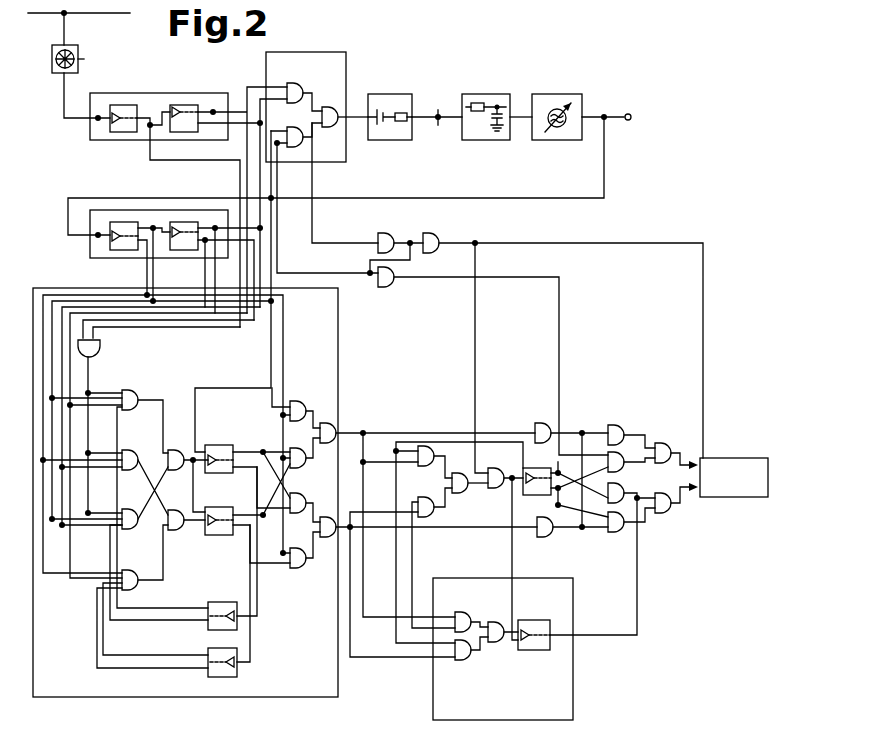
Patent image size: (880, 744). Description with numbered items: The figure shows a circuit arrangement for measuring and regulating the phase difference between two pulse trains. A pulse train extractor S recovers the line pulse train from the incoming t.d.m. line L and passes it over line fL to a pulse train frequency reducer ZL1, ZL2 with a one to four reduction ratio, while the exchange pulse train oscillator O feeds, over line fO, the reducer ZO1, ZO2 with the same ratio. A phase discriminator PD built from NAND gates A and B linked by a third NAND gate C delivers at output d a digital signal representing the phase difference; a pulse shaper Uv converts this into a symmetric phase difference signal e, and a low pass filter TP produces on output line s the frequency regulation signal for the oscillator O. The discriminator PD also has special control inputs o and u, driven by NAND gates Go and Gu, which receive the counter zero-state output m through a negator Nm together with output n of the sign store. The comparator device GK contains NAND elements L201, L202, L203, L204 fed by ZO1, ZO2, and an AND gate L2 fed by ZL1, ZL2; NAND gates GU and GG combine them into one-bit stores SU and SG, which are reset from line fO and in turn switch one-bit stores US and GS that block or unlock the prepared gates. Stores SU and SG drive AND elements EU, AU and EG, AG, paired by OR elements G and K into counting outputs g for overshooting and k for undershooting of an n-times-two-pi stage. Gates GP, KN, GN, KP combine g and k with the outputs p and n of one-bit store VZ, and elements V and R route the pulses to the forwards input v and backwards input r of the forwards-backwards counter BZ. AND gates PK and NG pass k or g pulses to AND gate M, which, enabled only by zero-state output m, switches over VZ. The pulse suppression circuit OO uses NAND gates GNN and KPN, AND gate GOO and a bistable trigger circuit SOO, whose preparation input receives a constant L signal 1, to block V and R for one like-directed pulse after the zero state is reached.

The pulse train extractor S is at (74, 59).
The incoming t.d.m. line L is at (103, 12).
The line carrying the line pulse train pulse sequence fL is at (75, 96).
The line pulse train frequency reducer stage ZL1 is at (127, 105).
The line pulse train frequency reducer stage ZL2 is at (186, 105).
The exchange pulse train frequency reducer stage ZO1 is at (125, 222).
The exchange pulse train frequency reducer stage ZO2 is at (186, 222).
The line carrying the exchange pulse train pulse sequence fO is at (73, 252).
The phase discriminator PD is at (340, 80).
The NAND gate A is at (295, 82).
The NAND gate B is at (295, 128).
The third NAND gate C is at (330, 129).
The phase discriminator output d is at (356, 107).
The pulse shaper Uv is at (390, 103).
The phase difference signal e is at (425, 107).
The low pass filter TP is at (486, 103).
The output line of the low pass filter s is at (520, 107).
The exchange pulse train oscillator O is at (557, 103).
The special control input o is at (283, 185).
The special control input u is at (328, 176).
The NAND gate Gu is at (383, 233).
The NAND gate Go is at (381, 288).
The negator Nm is at (435, 233).
The comparator device GK is at (318, 676).
The AND gate L2 is at (96, 352).
The NAND logic-linking element L201 is at (128, 390).
The NAND logic-linking element L202 is at (136, 451).
The NAND logic-linking element L203 is at (136, 535).
The NAND logic-linking element L204 is at (134, 590).
The NAND gate GU is at (176, 448).
The NAND gate GG is at (176, 508).
The 1-bit store SU is at (218, 445).
The 1-bit store SG is at (218, 507).
The 1-bit store US is at (222, 602).
The 1-bit store GS is at (210, 650).
The AND logic-linking element EU is at (302, 401).
The AND logic-linking element EG is at (312, 462).
The AND logic-linking element AU is at (312, 498).
The AND logic-linking element AG is at (294, 570).
The OR logic-linking element G is at (328, 422).
The OR logic-linking element K is at (328, 538).
The counting pulse output g is at (350, 462).
The counting pulse output k is at (350, 492).
The AND gate NG is at (441, 458).
The AND gate PK is at (419, 500).
The AND gate M is at (495, 491).
The 1-bit store VZ is at (525, 468).
The output of the 1-bit store VZ n is at (553, 438).
The output of the 1-bit store VZ p is at (554, 536).
The logic-linking element GP is at (610, 425).
The logic-linking element KN is at (624, 455).
The logic-linking element GN is at (624, 493).
The logic-linking element KP is at (618, 530).
The logic-linking element V is at (662, 443).
The logic-linking element R is at (662, 517).
The forwards counting input v is at (683, 454).
The backwards counting input r is at (686, 496).
The counter zero-state output m is at (717, 447).
The forwards-backwards counter BZ is at (734, 477).
The pulse suppression circuit OO is at (567, 709).
The NAND gate GNN is at (457, 611).
The NAND gate KPN is at (455, 663).
The AND gate GOO is at (501, 647).
The bistable trigger circuit SOO is at (534, 620).
The L signal 1 is at (524, 650).